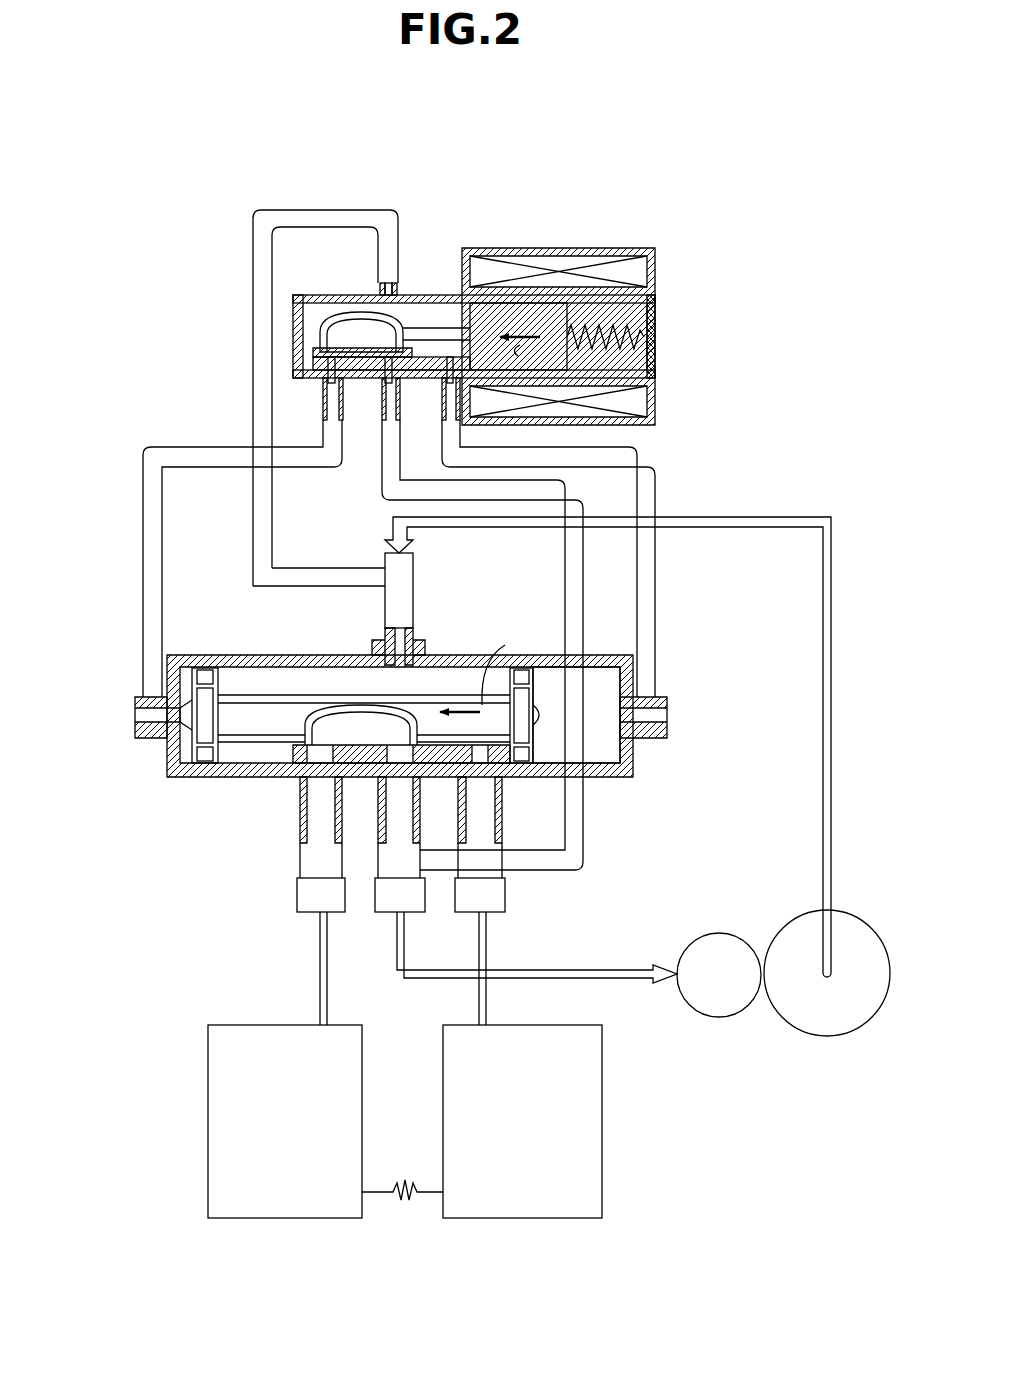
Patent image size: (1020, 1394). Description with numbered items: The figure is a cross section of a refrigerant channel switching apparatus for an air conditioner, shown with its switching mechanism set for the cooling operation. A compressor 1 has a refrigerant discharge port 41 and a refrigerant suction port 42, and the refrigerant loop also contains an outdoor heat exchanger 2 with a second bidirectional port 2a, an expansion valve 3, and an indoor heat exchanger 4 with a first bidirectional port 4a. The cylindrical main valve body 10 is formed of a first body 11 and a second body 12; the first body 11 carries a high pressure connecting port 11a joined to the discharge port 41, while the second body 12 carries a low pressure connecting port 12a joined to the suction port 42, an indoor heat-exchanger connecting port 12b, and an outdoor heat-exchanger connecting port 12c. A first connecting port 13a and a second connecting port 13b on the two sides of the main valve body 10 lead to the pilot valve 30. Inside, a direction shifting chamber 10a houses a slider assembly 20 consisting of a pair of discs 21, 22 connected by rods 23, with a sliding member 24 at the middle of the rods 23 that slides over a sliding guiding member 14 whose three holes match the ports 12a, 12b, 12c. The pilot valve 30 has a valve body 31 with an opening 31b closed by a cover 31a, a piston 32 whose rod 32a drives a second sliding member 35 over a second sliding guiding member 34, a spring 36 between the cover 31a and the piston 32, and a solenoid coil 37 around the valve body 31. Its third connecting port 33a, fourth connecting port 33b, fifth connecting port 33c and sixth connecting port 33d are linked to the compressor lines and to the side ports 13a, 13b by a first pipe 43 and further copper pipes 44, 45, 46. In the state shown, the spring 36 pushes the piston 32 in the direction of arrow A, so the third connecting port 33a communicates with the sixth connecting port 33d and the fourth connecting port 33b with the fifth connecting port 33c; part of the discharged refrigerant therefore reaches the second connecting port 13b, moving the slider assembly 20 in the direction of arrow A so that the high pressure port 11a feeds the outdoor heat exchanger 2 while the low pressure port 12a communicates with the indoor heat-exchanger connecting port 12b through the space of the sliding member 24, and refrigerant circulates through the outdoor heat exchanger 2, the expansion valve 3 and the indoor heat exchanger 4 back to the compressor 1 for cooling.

The compressor 1 is at (832, 1033).
The outdoor heat exchanger 2 is at (600, 1200).
The second bidirectional port 2a is at (470, 905).
The expansion valve 3 is at (400, 1200).
The indoor heat exchanger 4 is at (215, 1193).
The first bidirectional port 4a is at (300, 905).
The main valve body 10 is at (401, 756).
The direction shifting chamber 10a is at (568, 712).
The first body 11 is at (620, 650).
The high pressure connecting port 11a is at (413, 640).
The second body 12 is at (477, 853).
The low pressure connecting port 12a is at (400, 800).
The indoor heat-exchanger connecting port 12b is at (322, 800).
The outdoor heat-exchanger connecting port 12c is at (490, 800).
The first connecting port 13a is at (140, 712).
The second connecting port 13b is at (667, 722).
The sliding guiding member 14 is at (300, 758).
The slider assembly 20 is at (363, 729).
The disc 21 is at (205, 765).
The disc 22 is at (525, 765).
The rods 23 is at (250, 658).
The sliding member 24 is at (325, 672).
The pilot valve 30 is at (473, 351).
The valve body 31 is at (527, 274).
The cover 31a is at (655, 340).
The opening 31b is at (650, 325).
The piston 32 is at (502, 303).
The rod 32a is at (417, 333).
The third connecting port 33a is at (385, 292).
The fourth connecting port 33b is at (385, 430).
The fifth connecting port 33c is at (323, 385).
The sixth connecting port 33d is at (445, 430).
The second sliding guiding member 34 is at (318, 360).
The second sliding member 35 is at (333, 327).
The spring 36 is at (605, 320).
The solenoid coil 37 is at (548, 255).
The refrigerant discharge port 41 is at (413, 565).
The refrigerant suction port 42 is at (385, 905).
The first pipe 43 is at (288, 213).
The copper pipe 44 is at (575, 865).
The copper pipe 45 is at (150, 455).
The copper pipe 46 is at (655, 573).